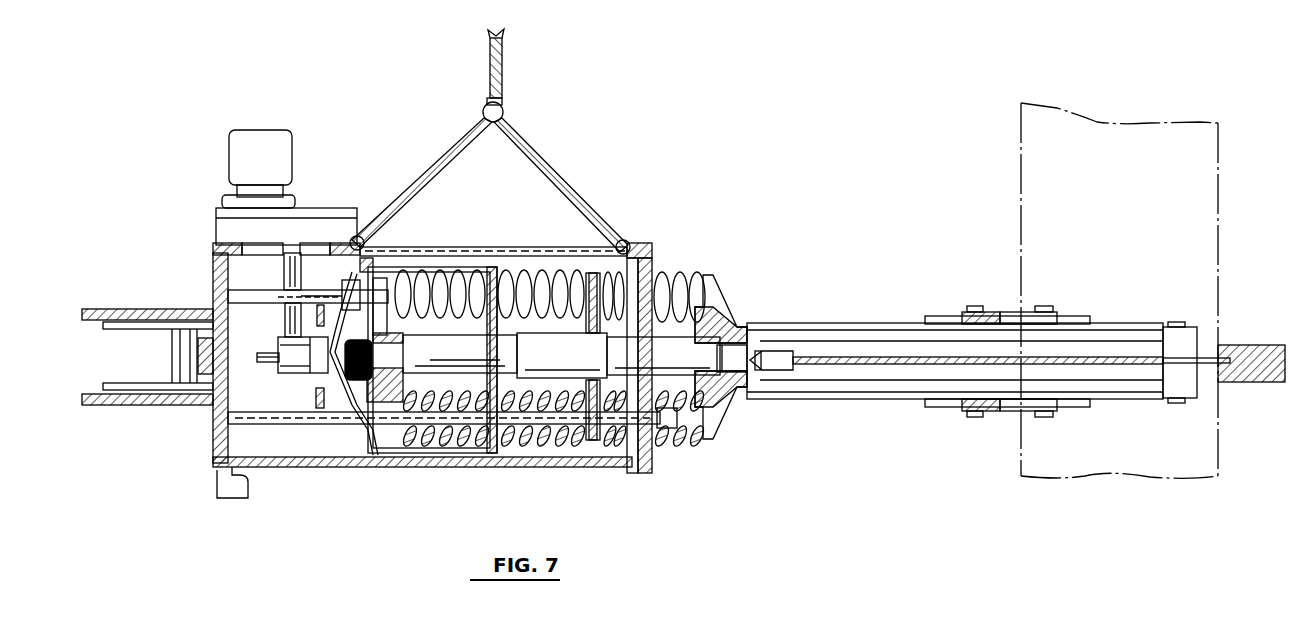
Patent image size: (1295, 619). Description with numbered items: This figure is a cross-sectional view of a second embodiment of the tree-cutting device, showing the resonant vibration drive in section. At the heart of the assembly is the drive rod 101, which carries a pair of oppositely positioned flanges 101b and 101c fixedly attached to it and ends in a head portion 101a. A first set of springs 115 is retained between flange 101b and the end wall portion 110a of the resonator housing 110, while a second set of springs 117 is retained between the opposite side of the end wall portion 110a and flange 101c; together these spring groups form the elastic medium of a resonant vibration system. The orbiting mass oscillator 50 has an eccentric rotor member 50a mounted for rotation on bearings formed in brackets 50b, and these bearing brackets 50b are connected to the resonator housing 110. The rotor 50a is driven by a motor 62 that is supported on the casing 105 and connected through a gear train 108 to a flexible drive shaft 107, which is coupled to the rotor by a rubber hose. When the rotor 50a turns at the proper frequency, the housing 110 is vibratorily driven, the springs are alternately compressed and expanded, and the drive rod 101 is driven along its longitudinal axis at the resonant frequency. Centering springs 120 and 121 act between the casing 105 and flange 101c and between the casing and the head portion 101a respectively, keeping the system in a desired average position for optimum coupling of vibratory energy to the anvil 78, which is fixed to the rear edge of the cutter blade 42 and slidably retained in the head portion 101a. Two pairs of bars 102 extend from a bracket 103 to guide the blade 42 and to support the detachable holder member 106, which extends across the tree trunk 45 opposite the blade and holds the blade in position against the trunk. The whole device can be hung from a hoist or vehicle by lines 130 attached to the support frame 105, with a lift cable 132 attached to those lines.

The cutter blade 42 is at (878, 357).
The tree trunk 45 is at (1153, 142).
The orbiting mass oscillator 50 is at (278, 380).
The eccentric rotor member 50a is at (280, 355).
The bearing brackets 50b is at (285, 367).
The motor 62 is at (265, 142).
The anvil 78 is at (727, 374).
The drive rod 101 is at (562, 355).
The head portion 101a is at (718, 327).
The flange 101b is at (387, 312).
The flange 101c is at (607, 380).
The bars 102 is at (807, 330).
The bracket 103 is at (130, 310).
The casing 105 is at (213, 248).
The detachable holder member 106 is at (1253, 353).
The flexible drive shaft 107 is at (285, 265).
The gear train 108 is at (332, 208).
The resonator housing 110 is at (340, 397).
The end wall portion 110a is at (490, 446).
The first set of springs 115 is at (432, 266).
The second set of springs 117 is at (532, 266).
The centering spring 120 is at (600, 262).
The centering spring 121 is at (690, 278).
The lines 130 is at (540, 148).
The lift cable 132 is at (488, 53).